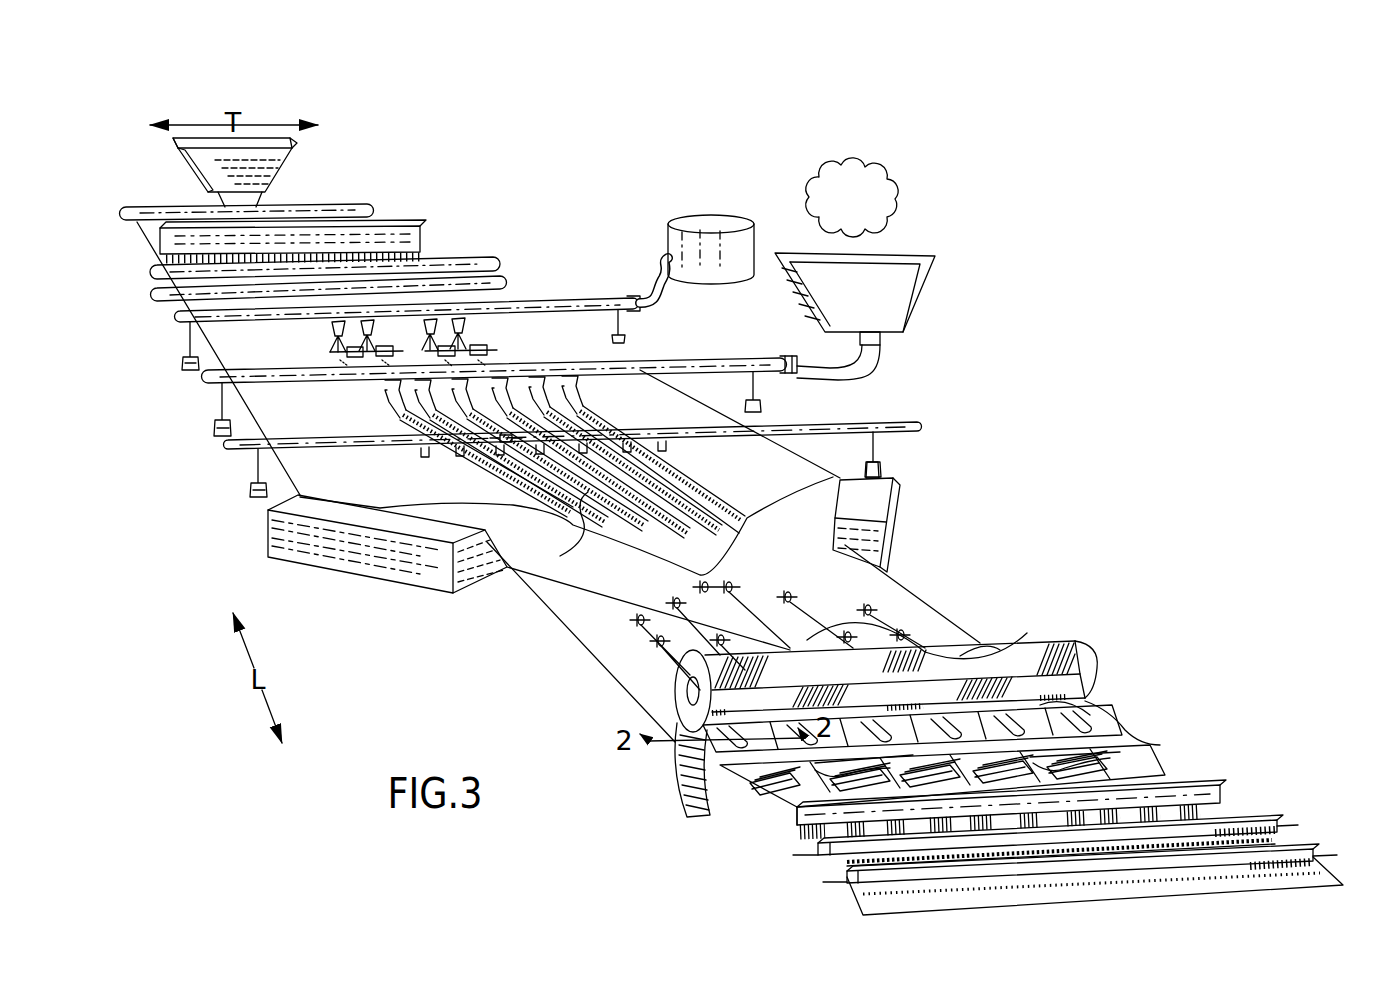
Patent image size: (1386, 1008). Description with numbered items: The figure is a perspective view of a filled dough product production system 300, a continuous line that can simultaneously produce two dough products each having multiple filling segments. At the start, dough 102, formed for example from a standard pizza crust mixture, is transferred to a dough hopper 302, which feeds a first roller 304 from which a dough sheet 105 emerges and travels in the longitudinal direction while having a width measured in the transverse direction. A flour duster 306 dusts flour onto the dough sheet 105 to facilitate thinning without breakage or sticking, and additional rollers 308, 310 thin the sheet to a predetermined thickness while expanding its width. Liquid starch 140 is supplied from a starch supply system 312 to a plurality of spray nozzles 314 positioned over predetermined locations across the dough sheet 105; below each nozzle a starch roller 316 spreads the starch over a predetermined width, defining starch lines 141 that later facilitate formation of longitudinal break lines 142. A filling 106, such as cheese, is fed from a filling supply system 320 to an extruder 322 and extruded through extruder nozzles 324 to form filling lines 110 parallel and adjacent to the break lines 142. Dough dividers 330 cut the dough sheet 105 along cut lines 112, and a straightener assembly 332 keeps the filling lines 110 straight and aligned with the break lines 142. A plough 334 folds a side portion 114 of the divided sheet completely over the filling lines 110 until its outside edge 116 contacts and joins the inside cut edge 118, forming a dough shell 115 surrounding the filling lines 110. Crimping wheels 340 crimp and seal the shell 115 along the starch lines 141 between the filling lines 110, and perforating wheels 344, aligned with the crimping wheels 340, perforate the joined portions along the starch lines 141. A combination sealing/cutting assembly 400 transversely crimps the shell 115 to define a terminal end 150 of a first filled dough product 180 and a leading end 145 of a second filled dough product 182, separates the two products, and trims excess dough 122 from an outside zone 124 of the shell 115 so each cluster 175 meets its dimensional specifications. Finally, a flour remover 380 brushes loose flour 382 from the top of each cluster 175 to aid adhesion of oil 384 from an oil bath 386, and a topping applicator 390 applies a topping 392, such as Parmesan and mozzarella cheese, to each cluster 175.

The dough 102 is at (262, 198).
The dough sheet 105 is at (140, 230).
The filling 106 is at (838, 211).
The filling lines 110 is at (575, 420).
The cut lines 112 is at (563, 536).
The side portion 114 is at (280, 462).
The dough shell 115 is at (585, 593).
The outside edge 116 is at (245, 415).
The inside cut edge 118 is at (640, 505).
The excess dough 122 is at (685, 798).
The outside zone 124 is at (603, 672).
The liquid starch 140 is at (490, 335).
The starch lines 141 is at (455, 355).
The break lines 142 is at (471, 341).
The leading end 145 is at (1118, 742).
The terminal end 150 is at (1125, 775).
The cluster 175 is at (949, 761).
The first filled dough product 180 is at (1180, 797).
The second filled dough product 182 is at (1080, 712).
The filled dough product production system 300 is at (940, 403).
The dough hopper 302 is at (285, 185).
The first roller 304 is at (367, 208).
The flour duster 306 is at (420, 236).
The roller 308 is at (493, 263).
The roller 310 is at (500, 283).
The starch supply system 312 is at (710, 215).
The spray nozzles 314 is at (460, 316).
The starch roller 316 is at (360, 352).
The filling supply system 320 is at (918, 290).
The extruder 322 is at (205, 382).
The extruder nozzles 324 is at (385, 396).
The dough dividers 330 is at (540, 415).
The straightener assembly 332 is at (400, 450).
The plough 334 is at (355, 560).
The crimping wheels 340 is at (800, 586).
The perforating wheels 344 is at (1009, 630).
The flour remover 380 is at (1225, 802).
The loose flour 382 is at (797, 823).
The oil 384 is at (818, 860).
The oil bath 386 is at (1273, 826).
The topping applicator 390 is at (1308, 855).
The topping 392 is at (845, 889).
The combination sealing/cutting assembly 400 is at (1097, 652).